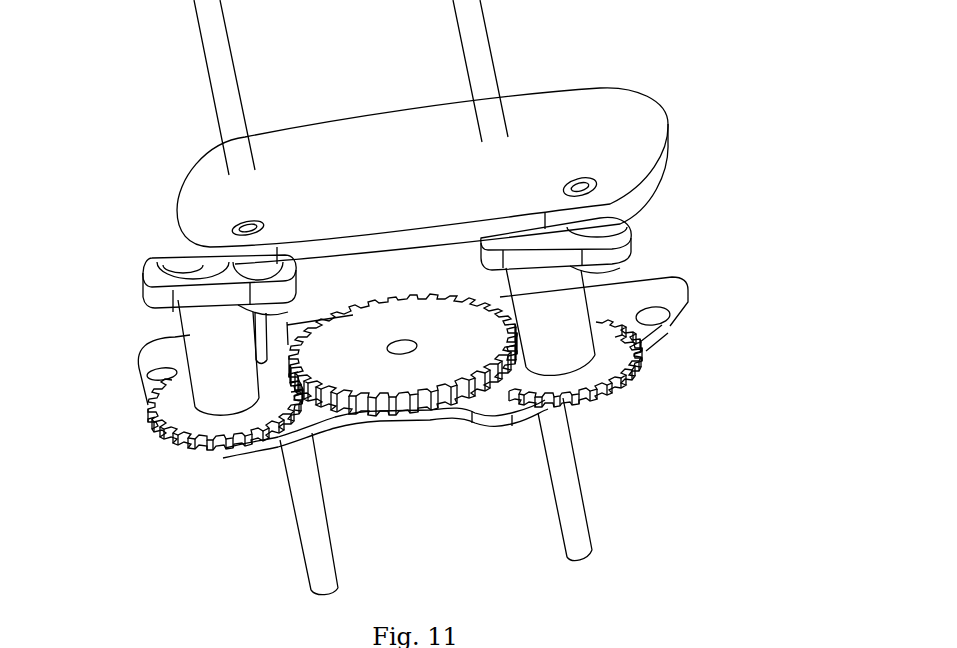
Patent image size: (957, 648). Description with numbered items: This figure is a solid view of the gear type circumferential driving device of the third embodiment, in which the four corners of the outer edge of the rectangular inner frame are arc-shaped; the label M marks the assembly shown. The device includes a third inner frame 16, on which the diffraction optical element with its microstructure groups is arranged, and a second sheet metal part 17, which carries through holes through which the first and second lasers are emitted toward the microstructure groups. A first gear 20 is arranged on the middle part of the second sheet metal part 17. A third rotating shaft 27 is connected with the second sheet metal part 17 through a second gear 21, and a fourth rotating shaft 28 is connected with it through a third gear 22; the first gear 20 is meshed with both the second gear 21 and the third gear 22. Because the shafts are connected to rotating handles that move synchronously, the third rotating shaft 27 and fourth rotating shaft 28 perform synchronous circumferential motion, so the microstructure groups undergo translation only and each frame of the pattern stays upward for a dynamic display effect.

The mechanism module M is at (348, 111).
The third inner frame 16 is at (650, 97).
The second sheet metal part 17 is at (672, 277).
The first gear 20 is at (402, 414).
The second gear 21 is at (621, 385).
The third gear 22 is at (163, 438).
The third rotating shaft 27 is at (582, 297).
The fourth rotating shaft 28 is at (180, 327).